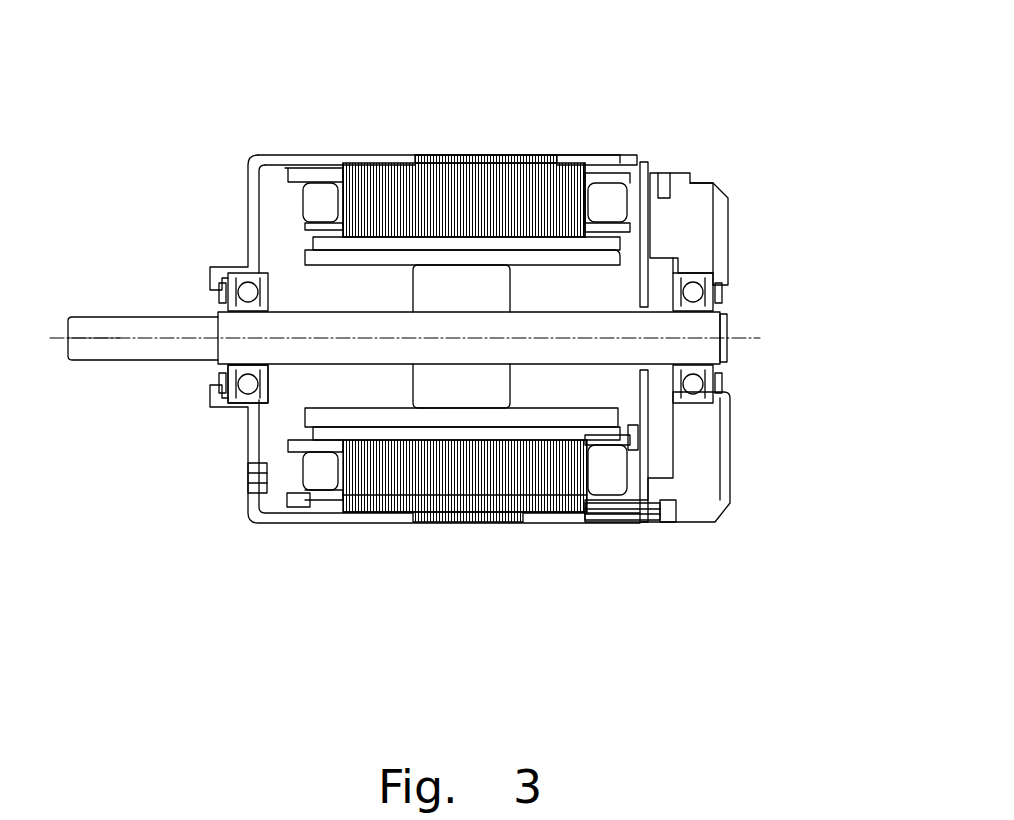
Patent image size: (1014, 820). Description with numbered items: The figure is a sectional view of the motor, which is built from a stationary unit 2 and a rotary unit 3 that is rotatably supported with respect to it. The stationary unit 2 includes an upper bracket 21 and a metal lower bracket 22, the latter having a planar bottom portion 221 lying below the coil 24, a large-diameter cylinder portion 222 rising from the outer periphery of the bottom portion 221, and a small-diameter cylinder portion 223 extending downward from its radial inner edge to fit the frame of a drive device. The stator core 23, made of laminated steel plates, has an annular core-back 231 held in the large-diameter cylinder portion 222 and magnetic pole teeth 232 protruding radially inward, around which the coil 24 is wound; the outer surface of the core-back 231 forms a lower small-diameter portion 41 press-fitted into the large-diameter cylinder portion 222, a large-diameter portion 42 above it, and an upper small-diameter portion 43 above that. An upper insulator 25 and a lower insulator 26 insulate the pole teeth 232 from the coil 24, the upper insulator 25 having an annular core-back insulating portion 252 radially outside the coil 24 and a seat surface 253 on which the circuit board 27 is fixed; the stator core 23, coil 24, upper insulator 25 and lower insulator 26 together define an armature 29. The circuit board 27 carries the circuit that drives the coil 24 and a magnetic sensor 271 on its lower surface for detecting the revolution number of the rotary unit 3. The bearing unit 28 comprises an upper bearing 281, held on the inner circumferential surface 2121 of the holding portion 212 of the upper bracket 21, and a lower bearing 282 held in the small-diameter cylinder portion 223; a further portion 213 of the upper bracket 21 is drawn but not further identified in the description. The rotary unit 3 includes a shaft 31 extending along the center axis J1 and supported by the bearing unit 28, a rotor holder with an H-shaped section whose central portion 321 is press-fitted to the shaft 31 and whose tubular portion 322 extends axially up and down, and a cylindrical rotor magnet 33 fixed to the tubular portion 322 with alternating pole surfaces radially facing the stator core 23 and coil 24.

The stationary unit 2 is at (214, 122).
The upper bracket 21 is at (708, 424).
The holding portion 212 is at (697, 268).
The inner circumferential surface 2121 is at (715, 282).
The holder protrusion 213 is at (590, 160).
The lower bracket 22 is at (247, 262).
The bottom portion 221 is at (285, 158).
The large-diameter cylinder portion 222 is at (257, 215).
The small-diameter cylinder portion 223 is at (238, 408).
The stator core 23 is at (383, 498).
The core-back 231 is at (445, 505).
The magnetic pole teeth 232 is at (310, 512).
The coil 24 is at (250, 205).
The upper insulator 25 is at (605, 170).
The core-back insulating portion 252 is at (646, 235).
The seat surface 253 is at (662, 172).
The lower insulator 26 is at (320, 200).
The circuit board 27 is at (702, 190).
The magnetic sensor 271 is at (638, 442).
The bearing unit 28 is at (222, 378).
The upper bearing 281 is at (720, 372).
The lower bearing 282 is at (220, 404).
The armature 29 is at (445, 152).
The rotary unit 3 is at (736, 323).
The shaft 31 is at (155, 330).
The central portion 321 is at (415, 512).
The tubular portion 322 is at (347, 418).
The rotor magnet 33 is at (527, 505).
The lower small-diameter portion 41 is at (368, 160).
The large-diameter portion 42 is at (480, 158).
The upper small-diameter portion 43 is at (572, 522).
The center axis J1 is at (105, 332).